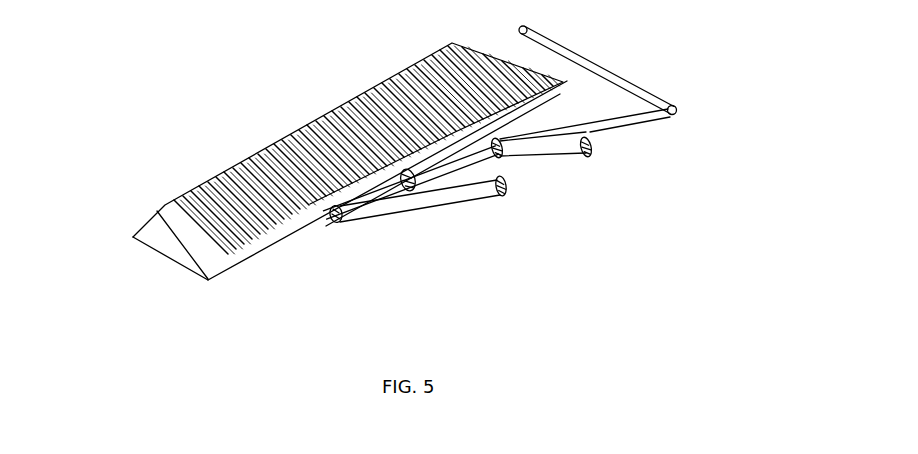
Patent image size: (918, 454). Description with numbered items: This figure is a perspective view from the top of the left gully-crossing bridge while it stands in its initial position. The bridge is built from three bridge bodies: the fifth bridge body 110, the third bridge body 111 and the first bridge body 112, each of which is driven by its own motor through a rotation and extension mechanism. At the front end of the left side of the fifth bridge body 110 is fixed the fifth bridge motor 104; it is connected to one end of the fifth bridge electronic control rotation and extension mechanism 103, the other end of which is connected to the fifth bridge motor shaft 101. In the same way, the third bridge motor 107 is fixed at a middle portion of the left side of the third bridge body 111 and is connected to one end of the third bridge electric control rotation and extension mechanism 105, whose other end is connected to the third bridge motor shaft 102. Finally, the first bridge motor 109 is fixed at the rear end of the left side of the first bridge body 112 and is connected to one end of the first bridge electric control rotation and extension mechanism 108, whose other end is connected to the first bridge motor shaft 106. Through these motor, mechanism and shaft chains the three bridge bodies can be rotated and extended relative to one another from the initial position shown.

The fifth bridge motor shaft 101 is at (470, 133).
The third bridge motor shaft 102 is at (498, 143).
The fifth bridge electronic control rotation and extension mechanism 103 is at (662, 118).
The fifth bridge motor 104 is at (597, 157).
The third bridge electric control rotation and extension mechanism 105 is at (513, 155).
The first bridge motor shaft 106 is at (505, 173).
The third bridge motor 107 is at (412, 195).
The first bridge electric control rotation and extension mechanism 108 is at (406, 195).
The first bridge motor 109 is at (330, 222).
The fifth bridge body 110 is at (447, 79).
The third bridge body 111 is at (300, 152).
The first bridge body 112 is at (188, 241).